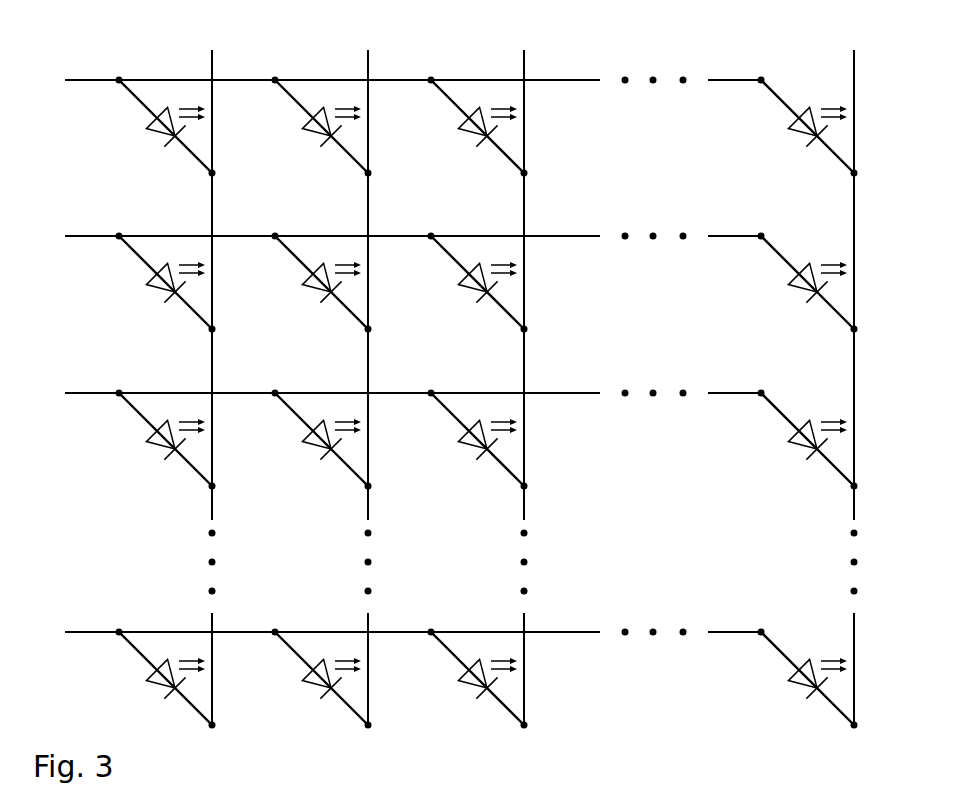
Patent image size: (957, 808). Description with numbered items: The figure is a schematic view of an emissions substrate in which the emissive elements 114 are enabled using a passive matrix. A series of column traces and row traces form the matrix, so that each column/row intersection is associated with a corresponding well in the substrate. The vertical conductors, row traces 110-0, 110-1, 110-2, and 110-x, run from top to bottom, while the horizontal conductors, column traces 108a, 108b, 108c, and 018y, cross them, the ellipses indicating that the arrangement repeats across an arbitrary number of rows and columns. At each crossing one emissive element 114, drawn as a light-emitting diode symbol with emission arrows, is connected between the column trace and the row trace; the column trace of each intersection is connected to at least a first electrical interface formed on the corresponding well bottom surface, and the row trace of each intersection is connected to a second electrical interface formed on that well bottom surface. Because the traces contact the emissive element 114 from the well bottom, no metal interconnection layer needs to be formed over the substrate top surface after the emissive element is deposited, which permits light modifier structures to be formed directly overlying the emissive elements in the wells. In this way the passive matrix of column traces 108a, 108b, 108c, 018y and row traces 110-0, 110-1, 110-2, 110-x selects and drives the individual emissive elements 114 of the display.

The row trace 110-0 is at (212, 373).
The row trace 110-1 is at (368, 373).
The row trace 110-2 is at (524, 373).
The row trace 110-x is at (854, 373).
The column trace 108a is at (400, 97).
The column trace 108b is at (400, 253).
The column trace 108c is at (400, 410).
The column trace 018y is at (399, 649).
The emissive element 114 is at (162, 133).